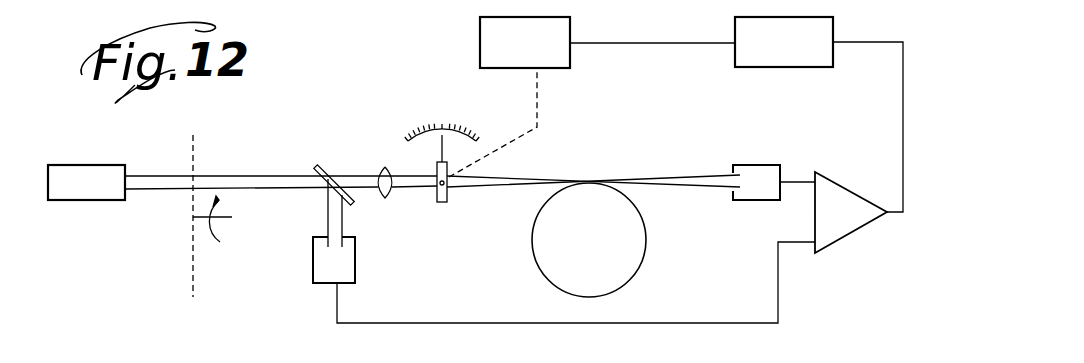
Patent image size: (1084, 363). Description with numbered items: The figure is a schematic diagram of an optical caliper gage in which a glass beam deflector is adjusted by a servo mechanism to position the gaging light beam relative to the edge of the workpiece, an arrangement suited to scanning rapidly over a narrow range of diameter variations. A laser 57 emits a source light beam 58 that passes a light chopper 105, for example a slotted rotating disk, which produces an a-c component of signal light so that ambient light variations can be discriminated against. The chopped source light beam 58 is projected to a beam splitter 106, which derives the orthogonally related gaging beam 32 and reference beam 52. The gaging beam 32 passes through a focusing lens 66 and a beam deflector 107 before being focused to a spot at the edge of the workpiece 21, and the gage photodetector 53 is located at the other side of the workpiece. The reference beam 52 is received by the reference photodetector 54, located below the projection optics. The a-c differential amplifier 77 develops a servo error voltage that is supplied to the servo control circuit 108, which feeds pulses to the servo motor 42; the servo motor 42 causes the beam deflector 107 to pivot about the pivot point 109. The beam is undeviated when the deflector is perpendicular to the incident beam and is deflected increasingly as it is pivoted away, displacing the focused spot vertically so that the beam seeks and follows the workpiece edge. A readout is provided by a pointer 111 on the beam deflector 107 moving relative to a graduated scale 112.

The laser 57 is at (95, 165).
The source light beam 58 is at (148, 176).
The light chopper 105 is at (193, 228).
The beam splitter 106 is at (318, 167).
The gaging beam 32 is at (353, 177).
The reference beam 52 is at (328, 222).
The reference photodetector 54 is at (313, 277).
The focusing lens 66 is at (383, 166).
The graduated scale 112 is at (436, 128).
The pointer 111 is at (442, 156).
The beam deflector 107 is at (443, 203).
The pivot point 109 is at (441, 185).
The workpiece 21 is at (550, 270).
The gage photodetector 53 is at (756, 165).
The a-c differential amplifier 77 is at (858, 188).
The servo motor 42 is at (480, 33).
The servo control circuit 108 is at (833, 37).